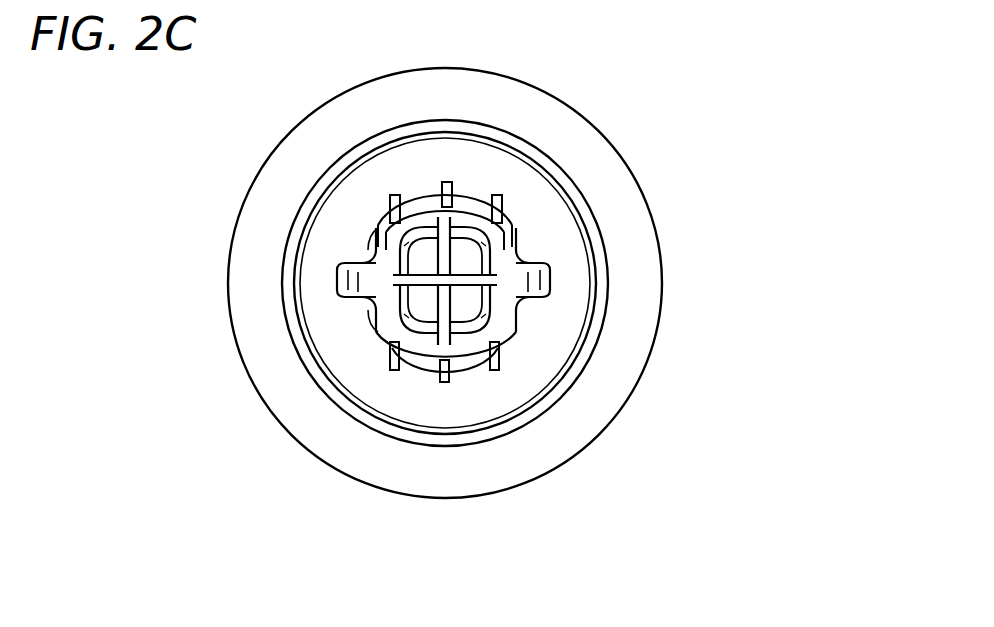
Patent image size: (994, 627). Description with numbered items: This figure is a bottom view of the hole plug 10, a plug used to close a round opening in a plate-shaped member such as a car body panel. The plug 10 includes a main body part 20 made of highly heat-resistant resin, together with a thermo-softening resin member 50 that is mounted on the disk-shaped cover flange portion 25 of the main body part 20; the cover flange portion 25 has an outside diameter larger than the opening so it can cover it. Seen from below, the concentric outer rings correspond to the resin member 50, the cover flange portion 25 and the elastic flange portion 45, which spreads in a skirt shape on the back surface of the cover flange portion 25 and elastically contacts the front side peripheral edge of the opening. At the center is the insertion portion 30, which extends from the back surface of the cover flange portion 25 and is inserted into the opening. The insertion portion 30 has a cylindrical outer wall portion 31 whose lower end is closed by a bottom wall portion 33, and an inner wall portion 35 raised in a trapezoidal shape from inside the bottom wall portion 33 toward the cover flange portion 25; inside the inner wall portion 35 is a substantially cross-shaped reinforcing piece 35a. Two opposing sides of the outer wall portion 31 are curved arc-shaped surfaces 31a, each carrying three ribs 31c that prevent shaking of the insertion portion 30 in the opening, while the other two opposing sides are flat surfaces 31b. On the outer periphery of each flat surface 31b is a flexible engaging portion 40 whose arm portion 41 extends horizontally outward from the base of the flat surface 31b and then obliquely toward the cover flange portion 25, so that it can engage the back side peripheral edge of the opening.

The hole plug 10 is at (672, 146).
The main body part 20 is at (556, 329).
The cover flange portion 25 is at (603, 282).
The insertion portion 30 is at (528, 325).
The outer wall portion 31 is at (500, 198).
The arc-shaped surface 31a is at (398, 197).
The flat surface 31b is at (377, 247).
The rib 31c is at (400, 217).
The bottom wall portion 33 is at (388, 343).
The inner wall portion 35 is at (475, 237).
The reinforcing piece 35a is at (420, 210).
The engaging portion 40 is at (530, 268).
The arm portion 41 is at (378, 297).
The elastic flange portion 45 is at (603, 325).
The thermo-softening resin member 50 is at (668, 240).